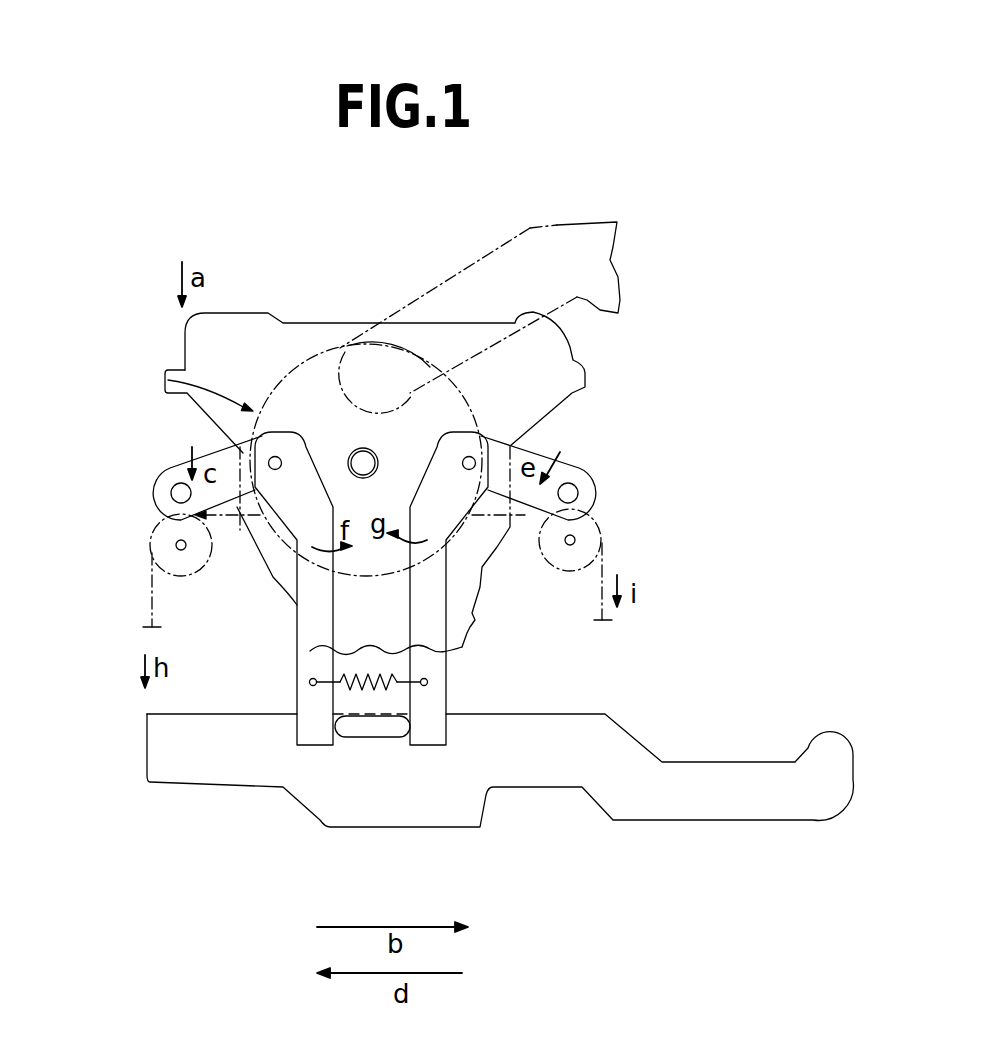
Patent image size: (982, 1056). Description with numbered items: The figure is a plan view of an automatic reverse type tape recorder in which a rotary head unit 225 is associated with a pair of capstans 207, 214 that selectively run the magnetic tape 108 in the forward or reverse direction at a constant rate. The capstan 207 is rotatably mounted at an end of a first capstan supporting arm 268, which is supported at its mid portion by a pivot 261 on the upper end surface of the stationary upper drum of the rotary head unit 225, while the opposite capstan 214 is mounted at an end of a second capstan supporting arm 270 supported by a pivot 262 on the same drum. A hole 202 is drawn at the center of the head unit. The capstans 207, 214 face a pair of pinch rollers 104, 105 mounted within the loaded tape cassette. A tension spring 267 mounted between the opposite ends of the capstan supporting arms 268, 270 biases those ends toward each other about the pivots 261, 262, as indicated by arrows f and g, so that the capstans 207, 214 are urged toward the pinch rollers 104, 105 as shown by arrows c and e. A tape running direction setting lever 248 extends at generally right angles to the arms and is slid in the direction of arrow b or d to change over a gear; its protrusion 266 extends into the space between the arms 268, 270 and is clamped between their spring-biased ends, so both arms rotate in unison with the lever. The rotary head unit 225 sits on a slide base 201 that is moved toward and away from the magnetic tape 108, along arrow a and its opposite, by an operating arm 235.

The slide base 201 is at (278, 322).
The shaft hole 202 is at (368, 460).
The capstan 207 is at (173, 495).
The capstan 214 is at (573, 490).
The rotary head unit 225 is at (168, 380).
The operating arm 235 is at (553, 240).
The tape running direction setting lever 248 is at (613, 806).
The pivot 261 is at (278, 457).
The pivot 262 is at (477, 437).
The protrusion 266 is at (390, 733).
The tension spring 267 is at (367, 673).
The first capstan supporting arm 268 is at (303, 588).
The second capstan supporting arm 270 is at (440, 627).
The pinch roller 104 is at (190, 572).
The pinch roller 105 is at (583, 568).
The magnetic tape 108 is at (152, 590).